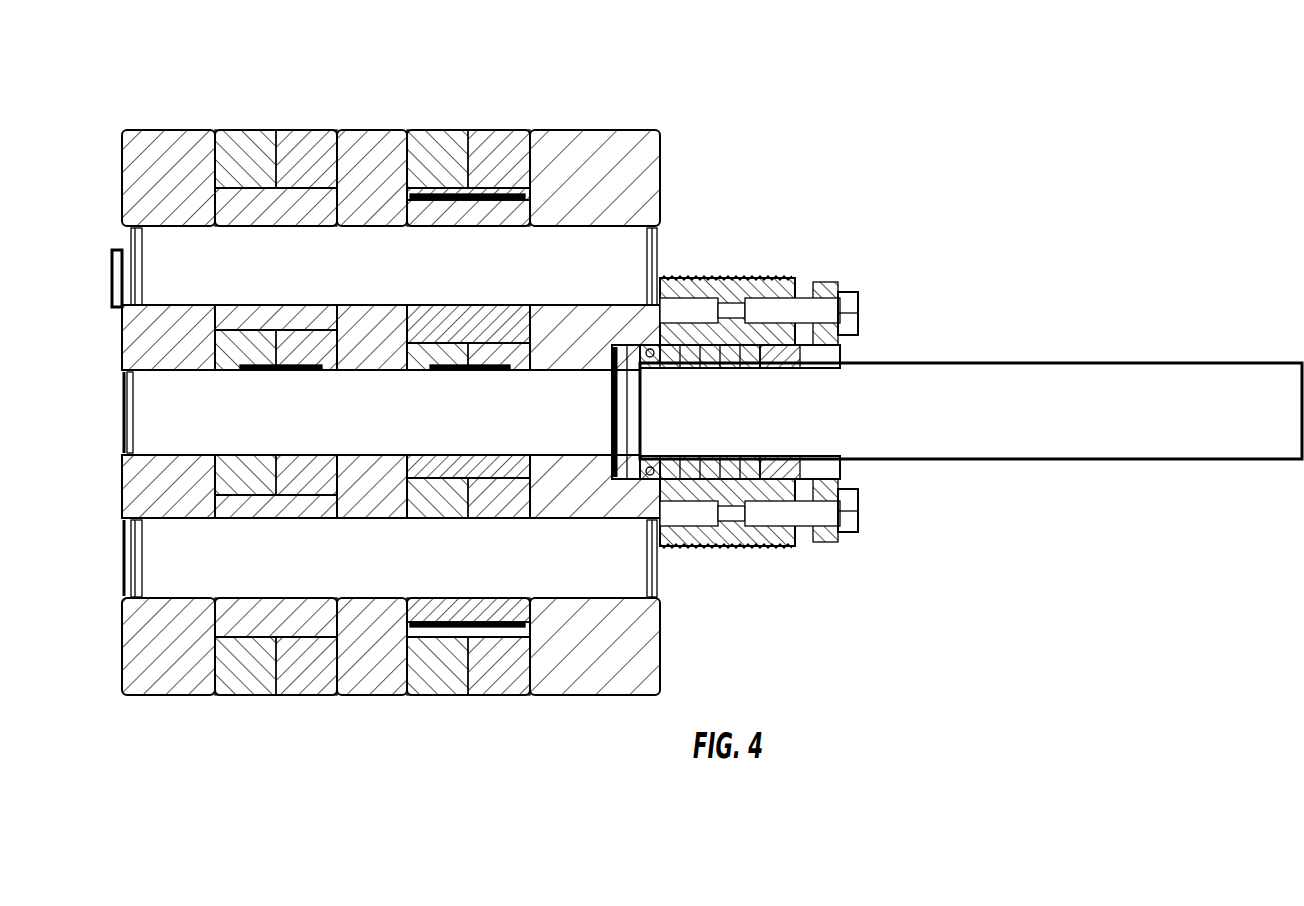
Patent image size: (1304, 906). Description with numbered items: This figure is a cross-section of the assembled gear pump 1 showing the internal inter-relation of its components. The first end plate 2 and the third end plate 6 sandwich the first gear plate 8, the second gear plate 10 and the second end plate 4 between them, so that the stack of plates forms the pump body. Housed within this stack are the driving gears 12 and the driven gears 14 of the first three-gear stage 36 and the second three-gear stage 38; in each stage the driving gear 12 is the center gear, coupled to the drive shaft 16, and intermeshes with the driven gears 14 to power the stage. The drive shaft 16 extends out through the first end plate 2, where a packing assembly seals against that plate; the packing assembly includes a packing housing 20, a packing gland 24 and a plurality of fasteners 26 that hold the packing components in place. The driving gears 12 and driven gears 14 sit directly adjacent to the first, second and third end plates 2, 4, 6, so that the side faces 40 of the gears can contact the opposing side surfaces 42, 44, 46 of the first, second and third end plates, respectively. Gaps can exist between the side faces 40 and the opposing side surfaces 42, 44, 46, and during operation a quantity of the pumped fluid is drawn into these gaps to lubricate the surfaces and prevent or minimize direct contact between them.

The gear pump 1 is at (783, 123).
The first end plate 2 is at (658, 137).
The second end plate 4 is at (382, 130).
The third end plate 6 is at (173, 130).
The first gear plate 8 is at (490, 130).
The second gear plate 10 is at (284, 130).
The driving gear 12 is at (237, 477).
The driven gear 14 is at (237, 315).
The drive shaft 16 is at (1238, 380).
The packing housing 20 is at (788, 278).
The packing gland 24 is at (838, 542).
The fastener 26 is at (860, 300).
The first three-gear stage 36 is at (462, 738).
The second three-gear stage 38 is at (290, 738).
The side face 40 is at (533, 322).
The side surface of first end plate 42 is at (523, 205).
The side surface of second end plate 44 is at (336, 205).
The side surface of third end plate 46 is at (220, 207).